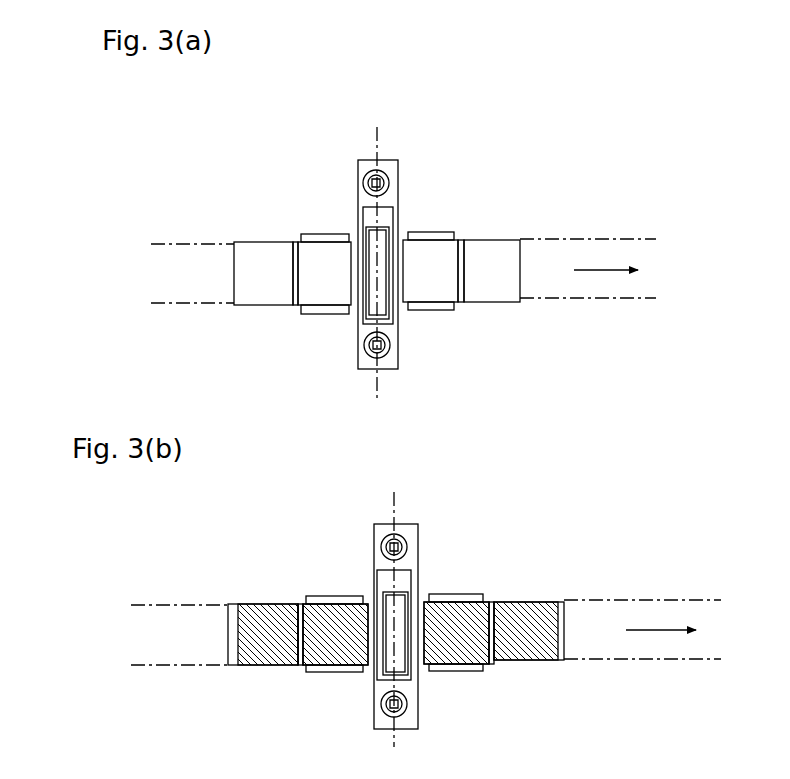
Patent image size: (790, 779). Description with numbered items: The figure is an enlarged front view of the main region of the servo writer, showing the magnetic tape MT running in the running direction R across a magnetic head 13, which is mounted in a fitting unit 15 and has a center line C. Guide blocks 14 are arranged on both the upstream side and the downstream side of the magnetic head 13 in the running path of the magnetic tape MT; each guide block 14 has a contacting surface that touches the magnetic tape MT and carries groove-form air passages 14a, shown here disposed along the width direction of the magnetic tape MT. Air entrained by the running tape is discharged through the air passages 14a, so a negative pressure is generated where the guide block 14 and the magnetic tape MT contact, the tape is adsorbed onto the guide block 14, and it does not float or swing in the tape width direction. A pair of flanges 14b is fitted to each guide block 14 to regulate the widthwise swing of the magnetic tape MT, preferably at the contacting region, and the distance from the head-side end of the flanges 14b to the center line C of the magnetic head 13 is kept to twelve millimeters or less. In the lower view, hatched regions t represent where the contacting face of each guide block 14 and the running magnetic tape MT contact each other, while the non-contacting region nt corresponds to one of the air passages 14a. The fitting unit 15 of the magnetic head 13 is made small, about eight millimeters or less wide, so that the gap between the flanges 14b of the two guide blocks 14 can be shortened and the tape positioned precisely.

In FIG. 3A, the magnetic head 13 is at (388, 228).
In FIG. 3B, the magnetic head 13 is at (403, 587).
In FIG. 3A, the guide block 14 is at (247, 240).
In FIG. 3B, the guide block 14 is at (535, 598).
In FIG. 3A, the air passage 14a is at (292, 304).
In FIG. 3B, the air passage 14a is at (298, 603).
In FIG. 3A, the flange 14b is at (320, 313).
In FIG. 3B, the flange 14b is at (330, 670).
In FIG. 3A, the fitting unit 15 is at (357, 162).
In FIG. 3B, the fitting unit 15 is at (373, 525).
In FIG. 3A, the center line C is at (389, 134).
In FIG. 3B, the center line C is at (397, 507).
In FIG. 3A, the magnetic tape MT is at (168, 302).
In FIG. 3B, the magnetic tape MT is at (138, 663).
In FIG. 3A, the running direction R is at (598, 267).
In FIG. 3B, the running direction R is at (647, 627).
In FIG. 3B, the hatched region t is at (255, 603).
In FIG. 3B, the non-contacting region nt is at (297, 663).